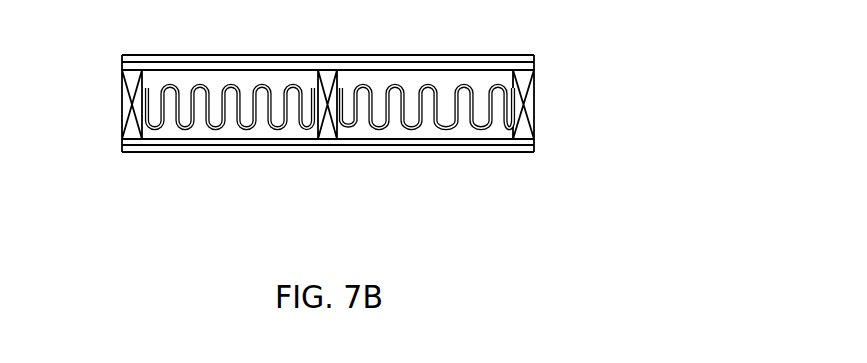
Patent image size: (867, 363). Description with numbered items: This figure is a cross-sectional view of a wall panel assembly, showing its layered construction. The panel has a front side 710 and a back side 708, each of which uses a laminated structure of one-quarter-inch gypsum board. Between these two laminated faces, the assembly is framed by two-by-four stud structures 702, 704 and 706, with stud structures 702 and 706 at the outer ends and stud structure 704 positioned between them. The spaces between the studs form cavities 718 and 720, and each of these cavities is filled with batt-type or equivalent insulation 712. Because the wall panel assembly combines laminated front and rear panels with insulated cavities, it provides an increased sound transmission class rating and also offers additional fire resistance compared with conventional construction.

The stud structure 702 is at (128, 122).
The stud structure 704 is at (317, 128).
The stud structure 706 is at (530, 118).
The back side 708 is at (492, 145).
The front side 710 is at (533, 63).
The insulation 712 is at (279, 131).
The cavity 718 is at (216, 78).
The cavity 720 is at (413, 82).